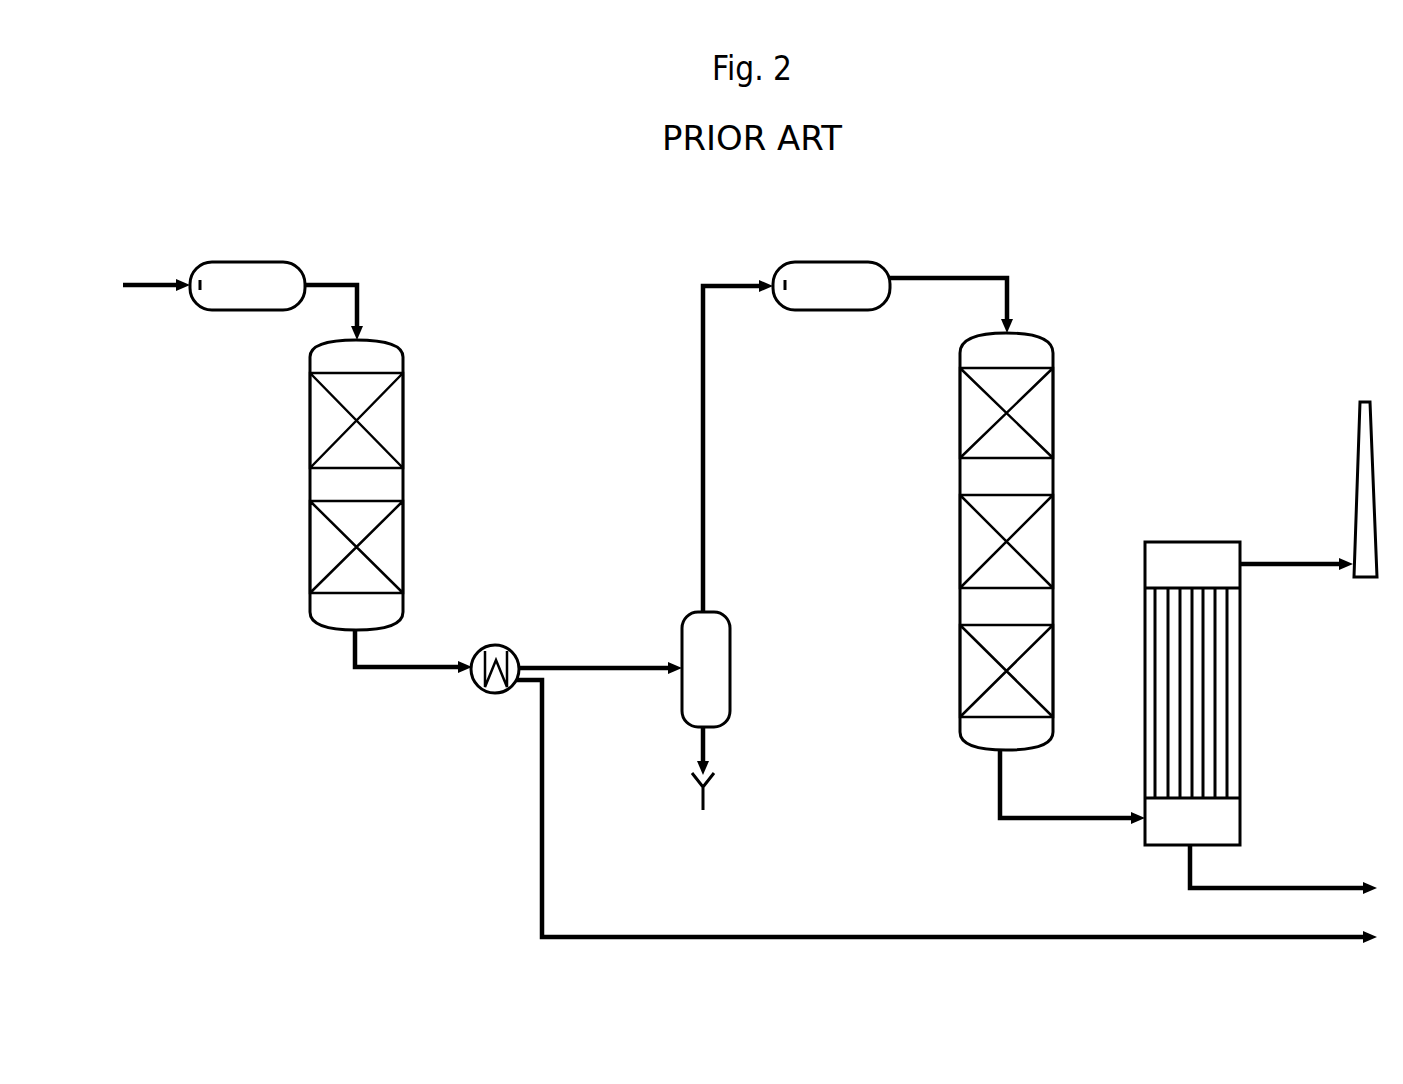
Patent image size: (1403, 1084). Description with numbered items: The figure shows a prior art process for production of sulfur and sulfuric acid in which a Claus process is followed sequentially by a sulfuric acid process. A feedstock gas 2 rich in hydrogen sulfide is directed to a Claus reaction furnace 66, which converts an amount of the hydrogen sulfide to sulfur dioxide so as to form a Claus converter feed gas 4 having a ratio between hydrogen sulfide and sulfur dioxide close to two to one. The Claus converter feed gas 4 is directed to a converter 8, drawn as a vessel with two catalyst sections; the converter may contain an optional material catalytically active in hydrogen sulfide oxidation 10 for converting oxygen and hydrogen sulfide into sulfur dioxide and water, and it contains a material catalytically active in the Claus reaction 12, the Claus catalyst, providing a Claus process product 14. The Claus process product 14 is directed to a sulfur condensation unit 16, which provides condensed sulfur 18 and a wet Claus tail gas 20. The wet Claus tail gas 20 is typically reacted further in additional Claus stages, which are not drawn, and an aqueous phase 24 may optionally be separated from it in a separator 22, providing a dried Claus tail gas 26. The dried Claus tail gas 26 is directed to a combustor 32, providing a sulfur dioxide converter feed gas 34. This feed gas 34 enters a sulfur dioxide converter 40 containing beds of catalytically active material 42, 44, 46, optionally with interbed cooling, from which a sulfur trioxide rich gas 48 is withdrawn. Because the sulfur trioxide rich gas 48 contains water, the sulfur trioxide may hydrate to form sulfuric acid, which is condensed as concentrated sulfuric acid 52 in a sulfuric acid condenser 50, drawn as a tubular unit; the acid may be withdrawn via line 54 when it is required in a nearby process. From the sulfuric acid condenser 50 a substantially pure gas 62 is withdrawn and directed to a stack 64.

The feedstock gas rich in H2S 2 is at (172, 283).
The Claus reaction furnace 66 is at (223, 261).
The Claus converter feed gas 4 is at (380, 302).
The converter 8 is at (424, 343).
The material catalytically active in H2S oxidation 10 is at (412, 425).
The material catalytically active in the Claus reaction 12 is at (412, 545).
The Claus process product 14 is at (428, 667).
The sulfur condensation unit 16 is at (514, 648).
The condensed sulfur 18 is at (544, 756).
The Claus tail gas 20 is at (615, 668).
The separator 22 is at (680, 612).
The aqueous phase 24 is at (698, 754).
The dried Claus tail gas 26 is at (701, 504).
The combustor 32 is at (797, 262).
The SO2 converter feed gas 34 is at (932, 276).
The SO2 converter 40 is at (1070, 333).
The bed of catalytically active material 42 is at (1056, 420).
The bed of catalytically active material 44 is at (1056, 530).
The bed of catalytically active material 46 is at (1056, 675).
The SO3 rich gas 48 is at (1077, 815).
The sulfuric acid condenser 50 is at (1244, 682).
The concentrated sulfuric acid 52 is at (1196, 880).
The sulfuric acid withdrawal line 54 is at (1298, 891).
The substantially pure gas 62 is at (1289, 562).
The stack 64 is at (1359, 444).